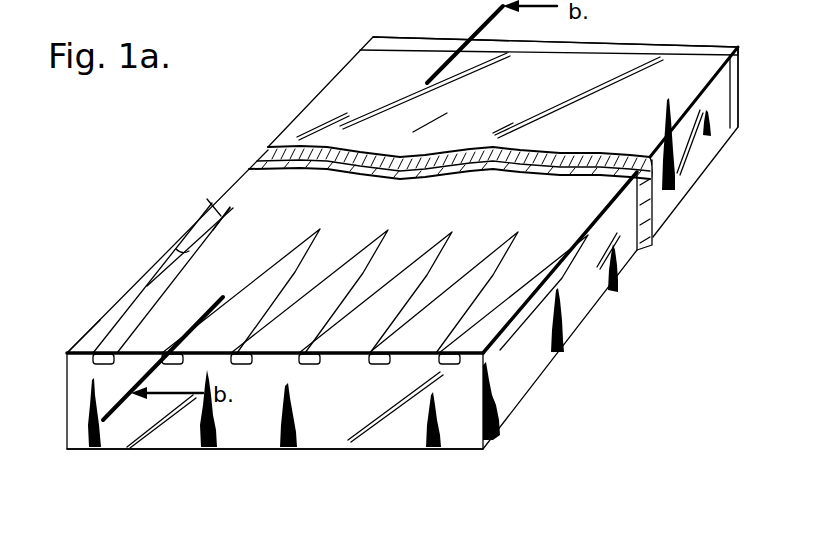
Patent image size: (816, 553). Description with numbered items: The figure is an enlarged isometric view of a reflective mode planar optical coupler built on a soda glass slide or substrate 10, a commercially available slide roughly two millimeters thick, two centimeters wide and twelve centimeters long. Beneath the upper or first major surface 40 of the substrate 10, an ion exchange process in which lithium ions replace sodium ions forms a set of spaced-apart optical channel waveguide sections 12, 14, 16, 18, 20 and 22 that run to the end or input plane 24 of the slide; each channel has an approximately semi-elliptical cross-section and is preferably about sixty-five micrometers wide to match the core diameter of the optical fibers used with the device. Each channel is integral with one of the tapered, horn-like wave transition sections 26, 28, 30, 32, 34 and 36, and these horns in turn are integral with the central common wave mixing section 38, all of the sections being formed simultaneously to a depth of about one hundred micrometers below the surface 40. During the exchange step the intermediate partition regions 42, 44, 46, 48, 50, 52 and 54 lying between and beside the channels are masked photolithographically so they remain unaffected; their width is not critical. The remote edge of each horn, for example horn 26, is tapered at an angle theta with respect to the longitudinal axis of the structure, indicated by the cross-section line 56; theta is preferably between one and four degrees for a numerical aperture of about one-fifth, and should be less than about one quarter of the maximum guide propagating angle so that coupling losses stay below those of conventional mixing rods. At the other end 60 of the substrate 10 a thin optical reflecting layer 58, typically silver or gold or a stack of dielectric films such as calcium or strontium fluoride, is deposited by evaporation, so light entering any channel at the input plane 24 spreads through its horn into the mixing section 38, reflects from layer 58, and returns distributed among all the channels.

The substrate 10 is at (521, 383).
The optical channel waveguide section 12 is at (123, 327).
The optical channel waveguide section 14 is at (189, 340).
The optical channel waveguide section 16 is at (253, 340).
The optical channel waveguide section 18 is at (324, 340).
The optical channel waveguide section 20 is at (392, 342).
The optical channel waveguide section 22 is at (460, 345).
The input plane 24 is at (328, 437).
The tapered wave transition horn-like section 26 is at (220, 256).
The tapered wave transition horn-like section 28 is at (280, 260).
The tapered wave transition horn-like section 30 is at (341, 260).
The tapered wave transition horn-like section 32 is at (411, 260).
The tapered wave transition horn-like section 34 is at (476, 260).
The tapered wave transition horn-like section 36 is at (550, 264).
The central common wave mixing section 38 is at (232, 188).
The upper or first major surface 40 is at (320, 90).
The intermediate partition region 42 is at (86, 345).
The intermediate partition region 44 is at (175, 336).
The intermediate partition region 46 is at (245, 339).
The intermediate partition region 48 is at (312, 341).
The intermediate partition region 50 is at (377, 347).
The intermediate partition region 52 is at (445, 347).
The intermediate partition region 54 is at (493, 344).
The cross-section line 56 is at (211, 203).
The optical reflecting layer 58 is at (637, 47).
The other end 60 is at (740, 52).
The taper angle theta is at (187, 226).